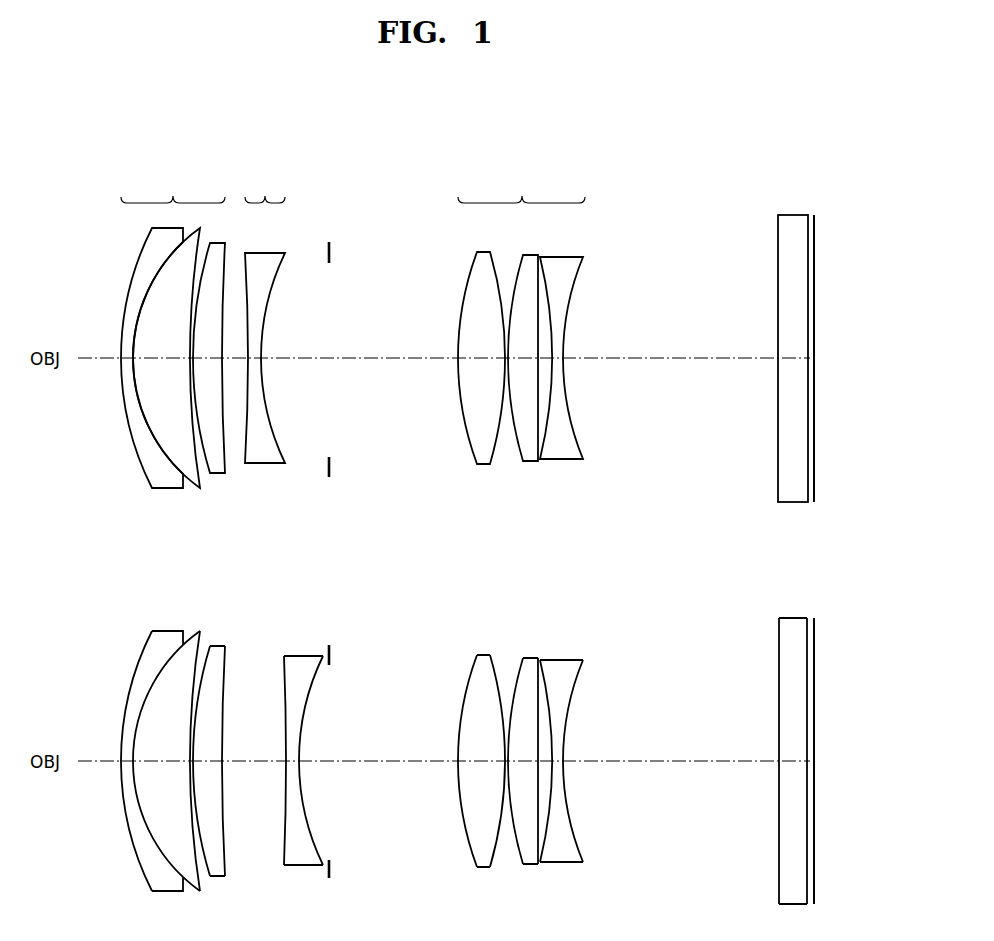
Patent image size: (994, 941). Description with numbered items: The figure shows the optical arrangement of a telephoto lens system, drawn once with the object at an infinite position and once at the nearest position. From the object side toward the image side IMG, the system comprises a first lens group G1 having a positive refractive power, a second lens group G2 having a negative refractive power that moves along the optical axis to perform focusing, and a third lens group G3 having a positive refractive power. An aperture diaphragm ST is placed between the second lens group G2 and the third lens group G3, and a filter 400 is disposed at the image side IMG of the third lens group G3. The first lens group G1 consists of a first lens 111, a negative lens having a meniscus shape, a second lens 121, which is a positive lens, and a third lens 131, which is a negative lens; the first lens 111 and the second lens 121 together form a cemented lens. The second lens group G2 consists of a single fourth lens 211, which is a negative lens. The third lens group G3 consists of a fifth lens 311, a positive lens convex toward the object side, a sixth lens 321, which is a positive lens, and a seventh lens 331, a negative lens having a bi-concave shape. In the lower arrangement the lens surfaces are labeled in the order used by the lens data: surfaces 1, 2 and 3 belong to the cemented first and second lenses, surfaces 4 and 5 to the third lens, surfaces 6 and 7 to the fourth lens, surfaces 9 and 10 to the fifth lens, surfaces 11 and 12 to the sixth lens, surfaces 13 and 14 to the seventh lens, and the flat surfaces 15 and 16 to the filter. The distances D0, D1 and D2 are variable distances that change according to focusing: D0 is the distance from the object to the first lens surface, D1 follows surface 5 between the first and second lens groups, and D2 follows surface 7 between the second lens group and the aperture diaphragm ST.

The first lens 111 is at (165, 489).
The second lens 121 is at (193, 489).
The third lens 131 is at (217, 474).
The fourth lens 211 is at (265, 464).
The fifth lens 311 is at (483, 465).
The sixth lens 321 is at (528, 462).
The seventh lens 331 is at (562, 460).
The filter 400 is at (778, 240).
The first lens group G1 is at (173, 187).
The second lens group G2 is at (265, 187).
The third lens group G3 is at (521, 187).
The aperture diaphragm ST is at (330, 250).
The image side IMG is at (814, 238).
The variable distance D0 is at (99, 759).
The variable distance D1 is at (257, 759).
The variable distance D2 is at (315, 759).
The surface 1 is at (127, 818).
The surface 2 is at (155, 843).
The surface 3 is at (195, 856).
The surface 4 is at (199, 828).
The surface 5 is at (224, 855).
The surface 6 is at (287, 815).
The surface 7 is at (315, 846).
The surface 9 is at (461, 804).
The surface 10 is at (498, 829).
The surface 11 is at (517, 846).
The surface 12 is at (538, 792).
The surface 13 is at (548, 820).
The surface 14 is at (577, 845).
The surface 15 is at (779, 822).
The surface 16 is at (807, 866).